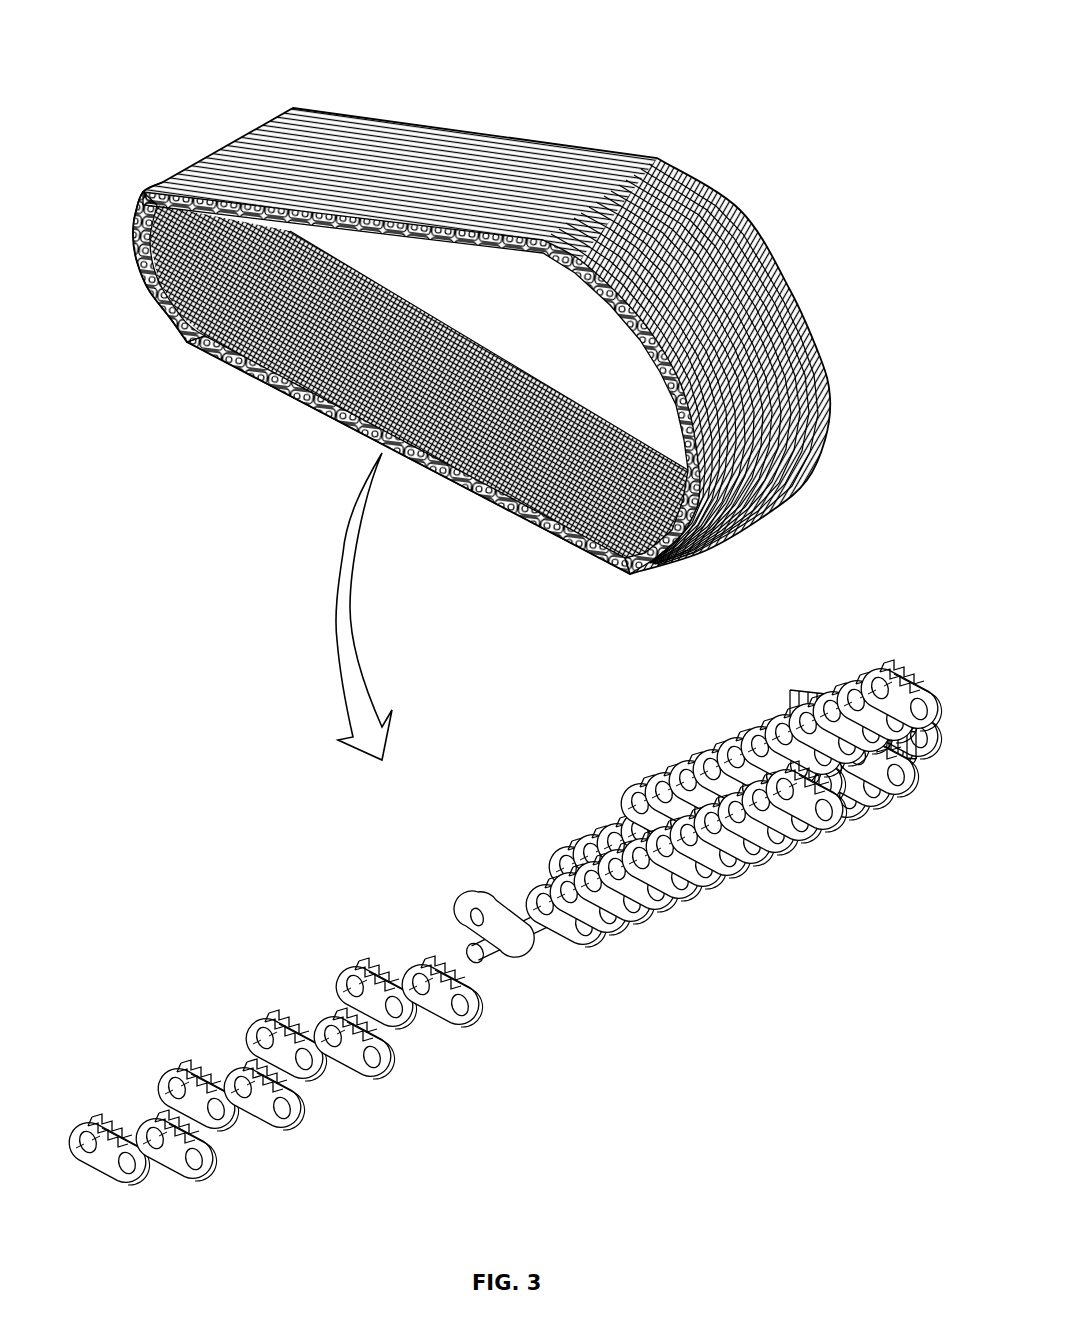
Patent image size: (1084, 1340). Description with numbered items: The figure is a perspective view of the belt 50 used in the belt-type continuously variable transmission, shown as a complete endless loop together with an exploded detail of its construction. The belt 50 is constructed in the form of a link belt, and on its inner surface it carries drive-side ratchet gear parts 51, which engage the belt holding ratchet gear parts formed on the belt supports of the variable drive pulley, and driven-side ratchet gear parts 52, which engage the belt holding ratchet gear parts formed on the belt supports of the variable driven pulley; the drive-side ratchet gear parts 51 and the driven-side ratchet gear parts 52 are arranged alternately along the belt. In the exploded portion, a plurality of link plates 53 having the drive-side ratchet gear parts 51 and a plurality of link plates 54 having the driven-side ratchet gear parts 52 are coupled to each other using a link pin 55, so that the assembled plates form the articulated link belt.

The belt 50 is at (537, 122).
The drive-side ratchet gear parts 51 is at (447, 968).
The driven-side ratchet gear parts 52 is at (740, 757).
The link plates 53 is at (623, 887).
The link plates 54 is at (207, 1177).
The link pin 55 is at (490, 950).